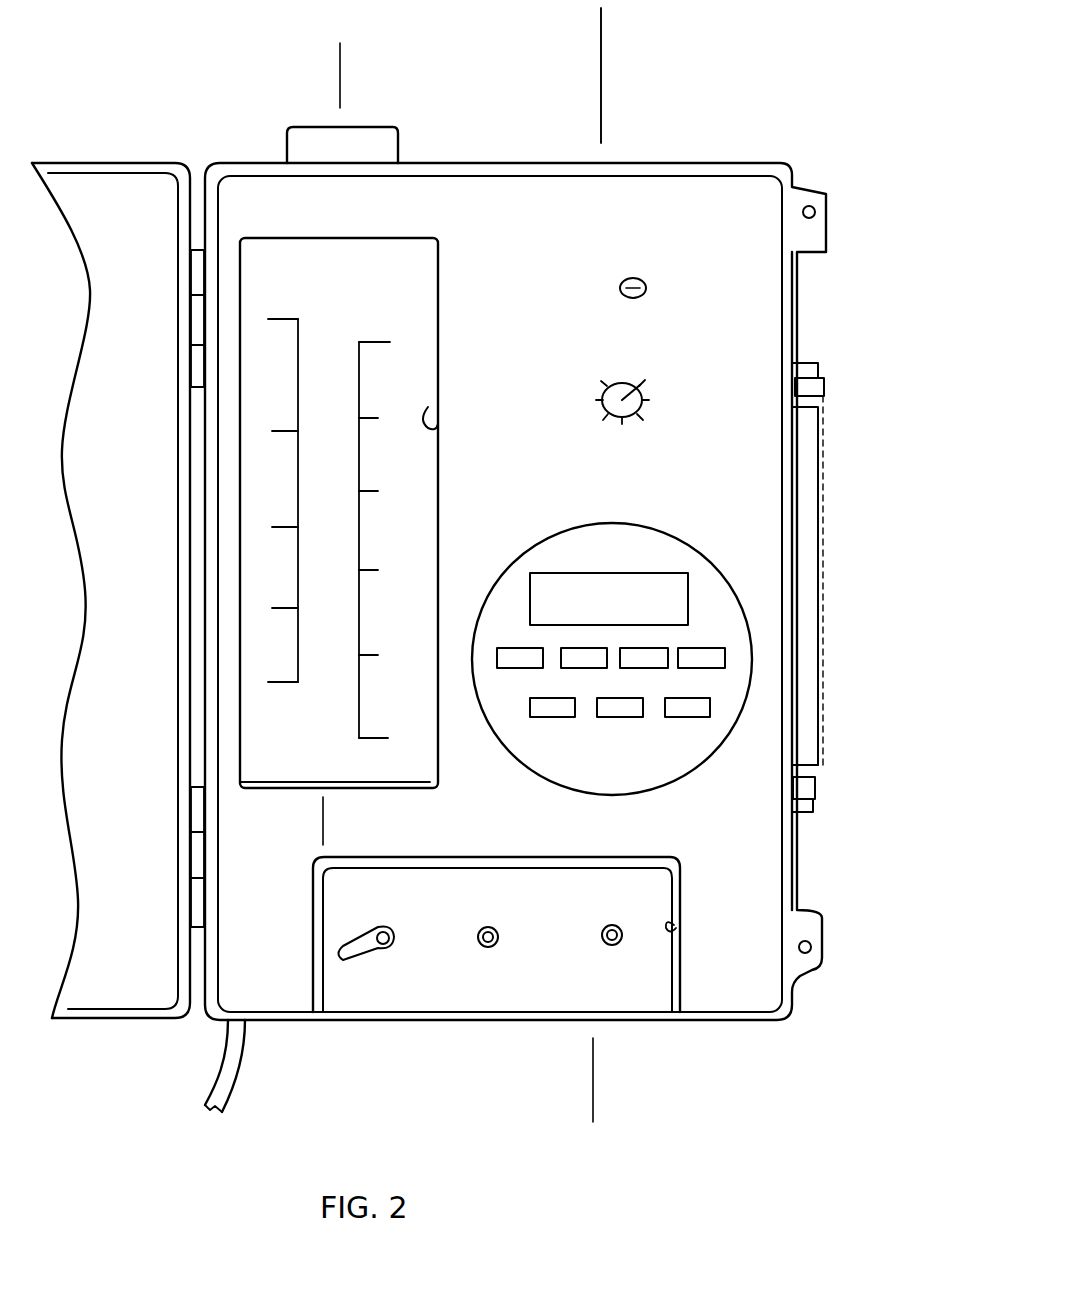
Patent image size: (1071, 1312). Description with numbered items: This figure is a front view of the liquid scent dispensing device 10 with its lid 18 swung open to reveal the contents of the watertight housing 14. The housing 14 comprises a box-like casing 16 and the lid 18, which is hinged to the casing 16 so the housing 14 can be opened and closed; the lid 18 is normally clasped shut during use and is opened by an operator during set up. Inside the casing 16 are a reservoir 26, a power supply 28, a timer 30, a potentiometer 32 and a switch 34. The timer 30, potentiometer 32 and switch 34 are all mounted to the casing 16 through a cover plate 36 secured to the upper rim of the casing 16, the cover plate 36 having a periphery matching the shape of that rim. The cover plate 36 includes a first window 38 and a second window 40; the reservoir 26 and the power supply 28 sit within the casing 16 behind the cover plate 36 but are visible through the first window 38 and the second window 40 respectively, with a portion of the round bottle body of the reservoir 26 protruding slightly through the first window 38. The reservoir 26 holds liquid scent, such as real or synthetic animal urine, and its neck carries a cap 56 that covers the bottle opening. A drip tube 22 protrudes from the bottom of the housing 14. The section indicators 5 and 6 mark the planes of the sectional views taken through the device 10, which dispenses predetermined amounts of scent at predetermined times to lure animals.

The liquid scent dispensing device 10 is at (847, 128).
The housing 14 is at (212, 162).
The casing 16 is at (795, 332).
The lid 18 is at (124, 162).
The drip tube 22 is at (245, 1076).
The reservoir 26 is at (382, 311).
The power supply 28 is at (645, 998).
The timer 30 is at (666, 535).
The potentiometer 32 is at (640, 416).
The switch 34 is at (646, 280).
The cover plate 36 is at (530, 246).
The first window 38 is at (428, 407).
The second window 40 is at (674, 925).
The cap 56 is at (400, 137).
The section line 5 is at (622, 22).
The section line 6 is at (355, 58).